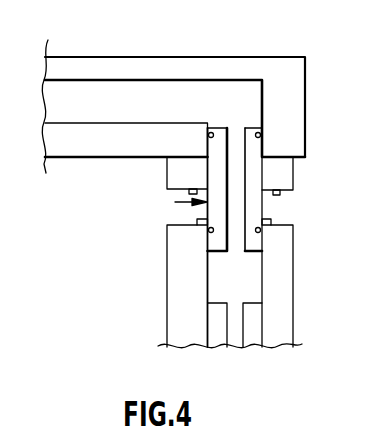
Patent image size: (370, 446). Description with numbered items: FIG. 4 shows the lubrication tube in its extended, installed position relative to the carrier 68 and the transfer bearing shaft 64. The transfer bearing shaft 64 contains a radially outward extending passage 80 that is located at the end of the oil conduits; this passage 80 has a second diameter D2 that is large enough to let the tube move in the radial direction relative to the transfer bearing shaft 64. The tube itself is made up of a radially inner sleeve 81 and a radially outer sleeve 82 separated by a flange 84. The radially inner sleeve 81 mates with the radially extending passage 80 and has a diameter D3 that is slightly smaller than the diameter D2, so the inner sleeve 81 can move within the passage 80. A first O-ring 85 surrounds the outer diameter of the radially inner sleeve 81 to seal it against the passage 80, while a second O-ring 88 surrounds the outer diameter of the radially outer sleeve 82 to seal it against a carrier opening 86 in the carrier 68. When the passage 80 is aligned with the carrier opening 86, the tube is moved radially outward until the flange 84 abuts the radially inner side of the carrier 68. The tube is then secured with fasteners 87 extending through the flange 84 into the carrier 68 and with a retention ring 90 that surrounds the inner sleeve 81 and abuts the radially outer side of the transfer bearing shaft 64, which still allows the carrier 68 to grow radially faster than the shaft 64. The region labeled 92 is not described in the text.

The transfer bearing shaft 64 is at (293, 298).
The carrier 68 is at (244, 57).
The radially outward extending passage 80 is at (235, 320).
The radially inner sleeve 81 is at (271, 221).
The radially outer sleeve 82 is at (219, 128).
The flange 84 is at (165, 167).
The first O-ring 85 is at (208, 230).
The carrier opening 86 is at (231, 113).
The fasteners 87 is at (190, 193).
The second O-ring 88 is at (262, 135).
The retention ring 90 is at (197, 222).
The gap 92 is at (113, 78).
The second diameter D2 is at (249, 277).
The diameter of the radially inner sleeve D3 is at (278, 198).